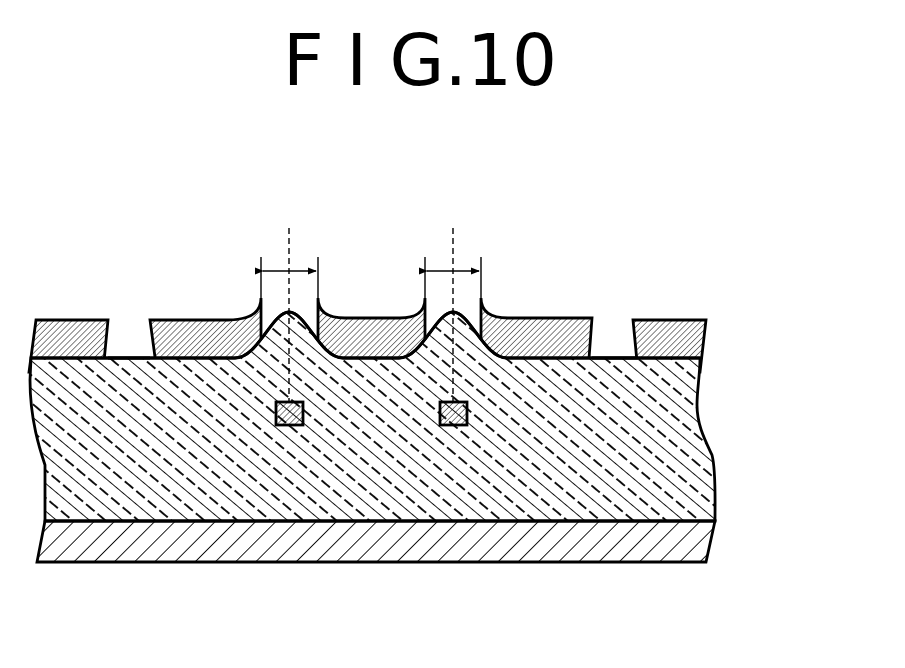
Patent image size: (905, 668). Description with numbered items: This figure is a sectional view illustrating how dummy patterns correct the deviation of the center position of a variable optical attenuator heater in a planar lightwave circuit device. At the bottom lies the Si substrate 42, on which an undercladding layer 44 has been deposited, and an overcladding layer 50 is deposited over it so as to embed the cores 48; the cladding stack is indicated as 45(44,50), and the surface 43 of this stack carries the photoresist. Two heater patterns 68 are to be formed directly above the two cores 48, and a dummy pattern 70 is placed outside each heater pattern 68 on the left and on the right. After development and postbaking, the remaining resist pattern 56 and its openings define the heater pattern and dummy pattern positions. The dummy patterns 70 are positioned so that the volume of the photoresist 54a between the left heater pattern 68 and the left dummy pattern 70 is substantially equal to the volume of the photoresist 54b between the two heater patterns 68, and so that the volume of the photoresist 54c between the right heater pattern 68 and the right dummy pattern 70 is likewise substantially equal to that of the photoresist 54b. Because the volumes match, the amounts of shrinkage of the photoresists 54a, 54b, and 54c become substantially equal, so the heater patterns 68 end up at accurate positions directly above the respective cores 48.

The Si substrate 42 is at (700, 540).
The surface of semiconductor layer 43 is at (709, 368).
The undercladding layer 44 is at (372, 416).
The semiconductor layer 45 is at (439, 416).
The core 48 is at (287, 427).
The overcladding layer 50 is at (692, 437).
The photoresist 54a is at (195, 328).
The photoresist 54b is at (376, 328).
The photoresist 54c is at (545, 328).
The resist pattern 56 is at (668, 312).
The heater patterns 68 is at (290, 222).
The dummy patterns 70 is at (120, 347).